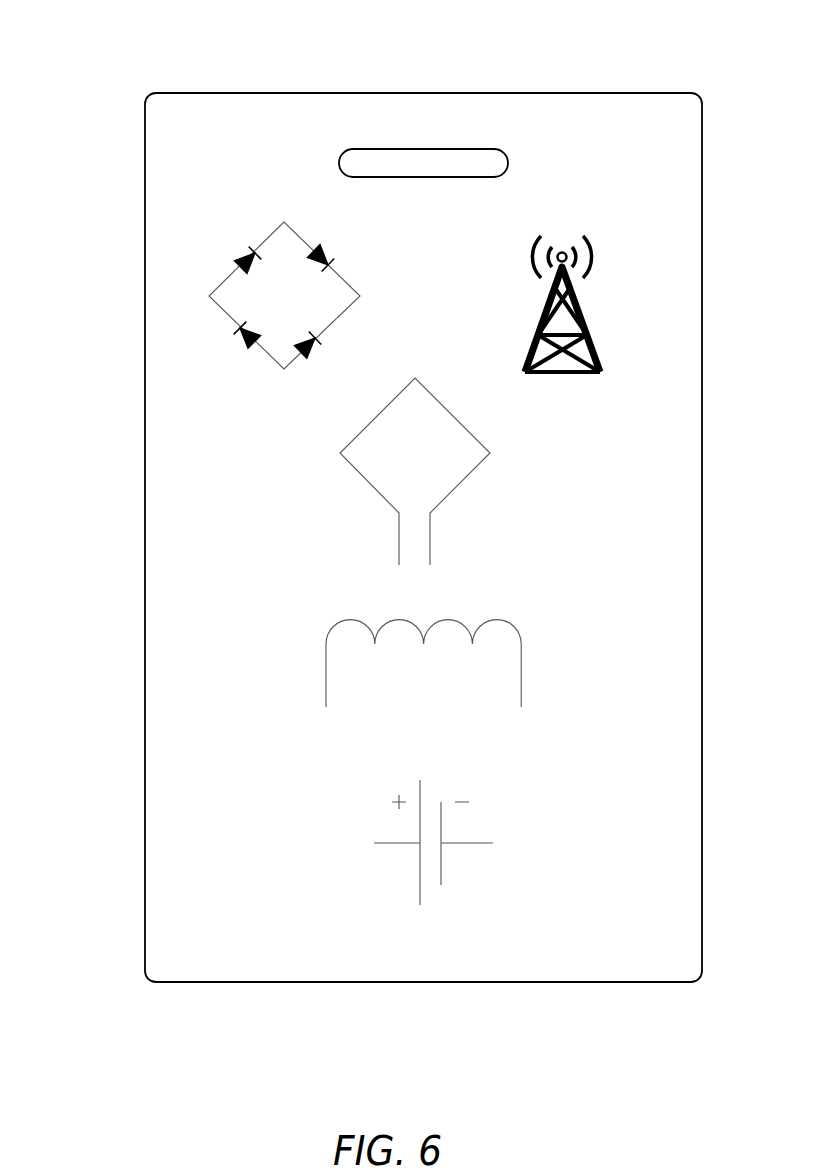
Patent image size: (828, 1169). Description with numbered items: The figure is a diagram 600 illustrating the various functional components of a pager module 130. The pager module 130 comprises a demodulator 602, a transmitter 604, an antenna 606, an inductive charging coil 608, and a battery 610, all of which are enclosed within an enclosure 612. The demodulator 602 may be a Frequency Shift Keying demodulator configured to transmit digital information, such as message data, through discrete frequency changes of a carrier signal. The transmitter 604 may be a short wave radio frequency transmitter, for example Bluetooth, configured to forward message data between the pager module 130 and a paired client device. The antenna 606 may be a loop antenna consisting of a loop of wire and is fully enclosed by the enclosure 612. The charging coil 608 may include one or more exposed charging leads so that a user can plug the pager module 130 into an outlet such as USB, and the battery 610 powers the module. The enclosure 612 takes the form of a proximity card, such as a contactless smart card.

The diagram 600 is at (150, 24).
The pager module 130 is at (145, 150).
The demodulator 602 is at (273, 232).
The transmitter 604 is at (533, 342).
The antenna 606 is at (399, 565).
The inductive charging coil 608 is at (326, 706).
The battery 610 is at (374, 843).
The enclosure 612 is at (442, 960).